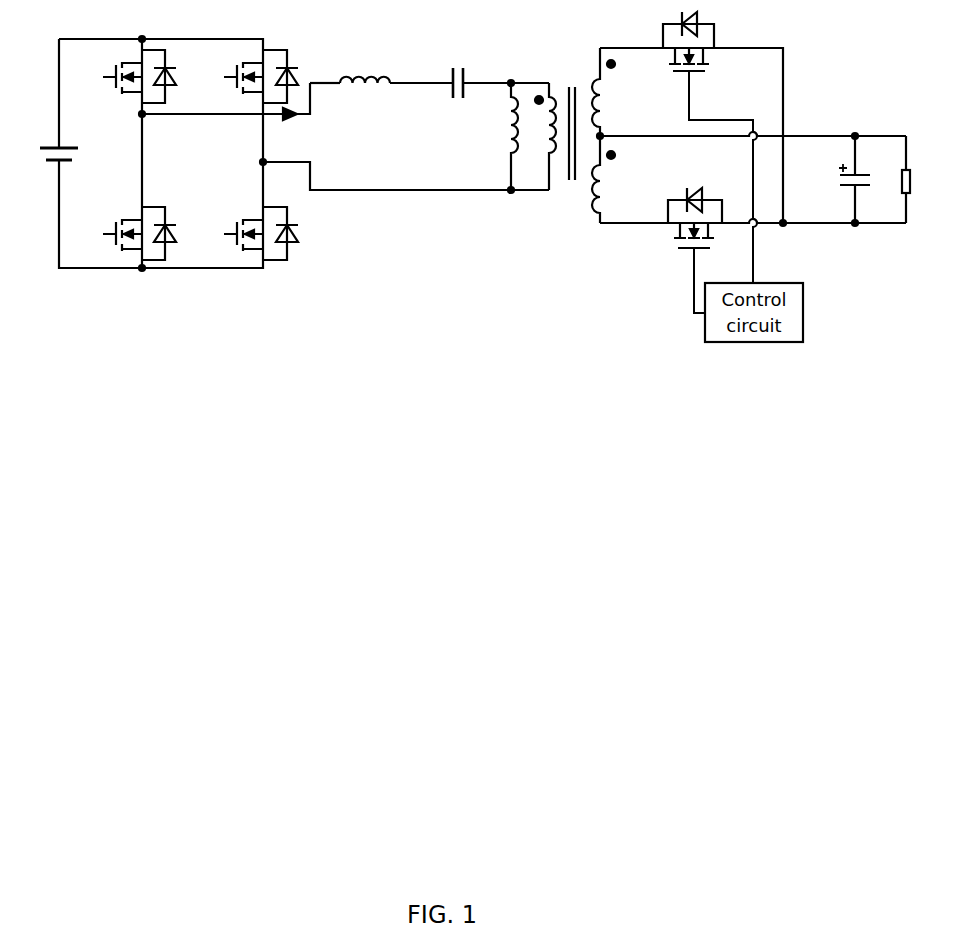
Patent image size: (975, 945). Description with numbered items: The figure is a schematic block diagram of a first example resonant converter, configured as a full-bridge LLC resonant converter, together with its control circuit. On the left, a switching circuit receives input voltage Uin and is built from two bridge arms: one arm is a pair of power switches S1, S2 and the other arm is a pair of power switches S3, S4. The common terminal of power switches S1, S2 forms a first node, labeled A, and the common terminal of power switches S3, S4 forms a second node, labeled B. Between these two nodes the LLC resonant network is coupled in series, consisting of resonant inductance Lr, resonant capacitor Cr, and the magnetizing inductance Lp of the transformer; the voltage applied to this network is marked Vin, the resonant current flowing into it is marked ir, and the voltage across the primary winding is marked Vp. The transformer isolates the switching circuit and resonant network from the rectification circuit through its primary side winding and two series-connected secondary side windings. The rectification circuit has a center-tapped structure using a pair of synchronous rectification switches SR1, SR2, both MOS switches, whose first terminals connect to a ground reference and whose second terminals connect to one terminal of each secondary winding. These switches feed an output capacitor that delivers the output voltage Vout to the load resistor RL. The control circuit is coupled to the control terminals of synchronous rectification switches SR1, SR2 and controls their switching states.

The power switch S1 is at (130, 76).
The power switch S2 is at (130, 233).
The power switch S3 is at (251, 76).
The power switch S4 is at (251, 233).
The input voltage Uin is at (47, 156).
The bridge node A is at (210, 104).
The bridge node B is at (394, 169).
The resonant current ir is at (288, 125).
The input voltage of resonant tank Vin is at (319, 116).
The resonant inductance Lr is at (396, 63).
The resonant capacitor Cr is at (498, 69).
The primary voltage Vp is at (498, 136).
The magnetizing inductance Lp is at (539, 136).
The synchronous rectification switch SR1 is at (674, 250).
The synchronous rectification switch SR2 is at (694, 147).
The output voltage Vout is at (858, 168).
The load resistor RL is at (918, 179).